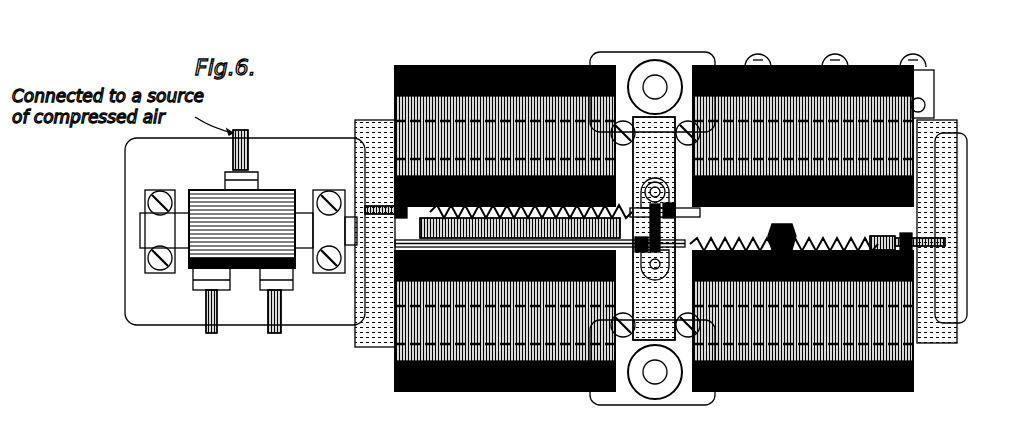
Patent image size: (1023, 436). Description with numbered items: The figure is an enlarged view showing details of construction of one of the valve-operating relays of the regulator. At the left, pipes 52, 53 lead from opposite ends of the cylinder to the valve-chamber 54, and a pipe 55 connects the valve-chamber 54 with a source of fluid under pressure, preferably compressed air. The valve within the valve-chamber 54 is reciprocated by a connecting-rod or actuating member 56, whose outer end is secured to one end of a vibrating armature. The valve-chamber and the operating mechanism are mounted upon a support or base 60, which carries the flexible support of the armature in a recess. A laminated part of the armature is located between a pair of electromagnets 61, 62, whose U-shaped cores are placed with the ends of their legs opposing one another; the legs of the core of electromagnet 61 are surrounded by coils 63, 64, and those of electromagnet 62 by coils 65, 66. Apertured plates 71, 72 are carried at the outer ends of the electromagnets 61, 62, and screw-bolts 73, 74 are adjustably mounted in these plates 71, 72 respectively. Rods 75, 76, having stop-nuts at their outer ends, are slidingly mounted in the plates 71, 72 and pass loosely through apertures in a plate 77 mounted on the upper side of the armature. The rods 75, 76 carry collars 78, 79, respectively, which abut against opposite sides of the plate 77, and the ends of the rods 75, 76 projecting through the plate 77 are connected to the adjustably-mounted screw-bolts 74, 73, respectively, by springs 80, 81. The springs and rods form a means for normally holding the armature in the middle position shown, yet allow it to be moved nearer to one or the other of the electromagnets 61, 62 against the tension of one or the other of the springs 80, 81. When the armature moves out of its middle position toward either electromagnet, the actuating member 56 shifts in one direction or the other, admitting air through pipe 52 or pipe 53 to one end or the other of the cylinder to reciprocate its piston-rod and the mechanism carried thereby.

The pipe 52 is at (212, 325).
The pipe 53 is at (275, 328).
The valve-chamber 54 is at (205, 198).
The pipe 55 is at (247, 136).
The connecting-rod or actuating member 56 is at (352, 246).
The support or base 60 is at (125, 297).
The electromagnet 61 is at (368, 340).
The electromagnet 62 is at (943, 338).
The coil 63 is at (500, 67).
The coil 64 is at (518, 392).
The coil 65 is at (887, 68).
The coil 66 is at (852, 391).
The apertured plate 71 is at (388, 206).
The apertured plate 72 is at (918, 228).
The screw-bolt 73 is at (432, 212).
The screw-bolt 74 is at (882, 242).
The rod 75 is at (498, 242).
The rod 76 is at (838, 214).
The plate 77 is at (648, 196).
The collar 78 is at (640, 252).
The collar 79 is at (670, 208).
The spring 80 is at (540, 234).
The spring 81 is at (744, 240).